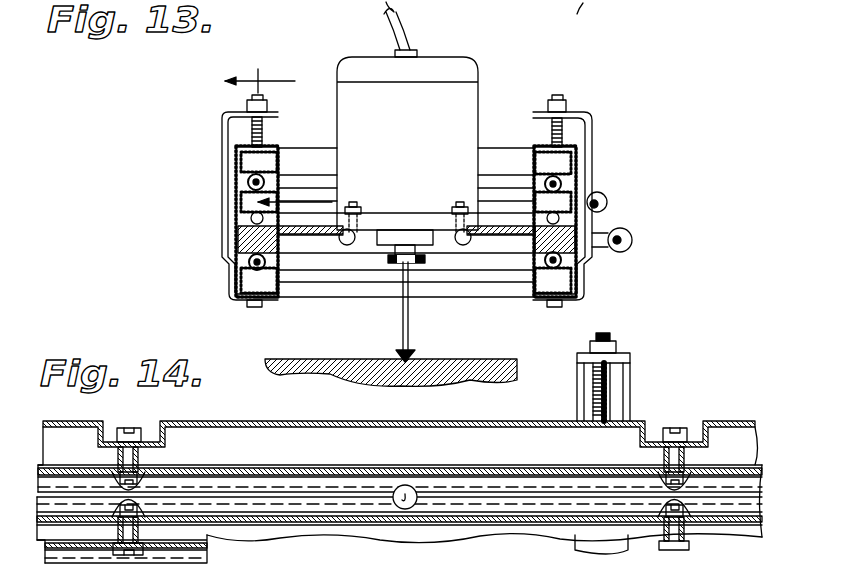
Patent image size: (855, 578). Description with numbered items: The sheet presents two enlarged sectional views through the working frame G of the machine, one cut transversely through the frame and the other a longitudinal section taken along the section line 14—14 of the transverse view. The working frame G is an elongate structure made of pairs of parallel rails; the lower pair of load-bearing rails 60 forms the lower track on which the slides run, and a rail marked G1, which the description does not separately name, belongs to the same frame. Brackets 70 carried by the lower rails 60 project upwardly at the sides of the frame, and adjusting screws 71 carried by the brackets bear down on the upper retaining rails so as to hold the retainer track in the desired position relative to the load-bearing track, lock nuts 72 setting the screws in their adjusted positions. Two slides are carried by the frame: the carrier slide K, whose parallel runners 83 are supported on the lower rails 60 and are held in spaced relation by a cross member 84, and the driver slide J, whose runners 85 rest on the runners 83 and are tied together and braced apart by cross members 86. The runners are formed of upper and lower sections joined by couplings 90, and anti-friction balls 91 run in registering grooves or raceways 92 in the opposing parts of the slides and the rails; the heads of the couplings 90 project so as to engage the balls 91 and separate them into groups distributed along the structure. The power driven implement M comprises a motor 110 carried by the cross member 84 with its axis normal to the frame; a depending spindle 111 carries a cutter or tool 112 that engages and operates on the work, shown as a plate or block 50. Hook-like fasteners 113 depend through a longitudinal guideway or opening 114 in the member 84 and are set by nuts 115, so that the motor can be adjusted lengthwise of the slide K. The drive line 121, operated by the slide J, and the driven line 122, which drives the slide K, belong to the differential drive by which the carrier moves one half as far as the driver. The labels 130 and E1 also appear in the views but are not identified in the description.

In FIG. 13, the sheet 130 is at (593, 12).
In FIG. 13, the motor 110 is at (407, 116).
In FIG. 13, the power driven implement M is at (473, 70).
In FIG. 13, the section line 14— 14 is at (278, 138).
In FIG. 13, the adjusting screws 71 is at (266, 130).
In FIG. 14, the adjusting screws 71 is at (612, 396).
In FIG. 13, the lock nuts 72 is at (570, 107).
In FIG. 14, the lock nuts 72 is at (618, 345).
In FIG. 13, the brackets 70 is at (592, 149).
In FIG. 14, the brackets 70 is at (632, 373).
In FIG. 13, the driver slide J is at (316, 182).
In FIG. 13, the rail G1 is at (522, 142).
In FIG. 14, the rail G1 is at (748, 422).
In FIG. 13, the working frame G is at (574, 298).
In FIG. 14, the working frame G is at (292, 418).
In FIG. 13, the cross members 86 is at (494, 186).
In FIG. 13, the grooves or raceways 92 is at (562, 182).
In FIG. 14, the grooves or raceways 92 is at (523, 516).
In FIG. 13, the anti-friction balls 91 is at (560, 216).
In FIG. 14, the anti-friction balls 91 is at (415, 490).
In FIG. 13, the nuts 115 is at (462, 200).
In FIG. 13, the hook-like fasteners 113 is at (340, 233).
In FIG. 13, the longitudinal guideway 114 is at (352, 228).
In FIG. 13, the runners 85 is at (238, 182).
In FIG. 13, the runners 83 is at (238, 246).
In FIG. 13, the cross member 84 is at (524, 228).
In FIG. 13, the drive line 121 is at (608, 202).
In FIG. 13, the driven line 122 is at (633, 240).
In FIG. 13, the carrier slide K is at (306, 252).
In FIG. 13, the lower load-bearing rails 60 is at (278, 297).
In FIG. 13, the spindle 111 is at (410, 323).
In FIG. 13, the cutter or tool 112 is at (398, 357).
In FIG. 13, the plate or block 50 is at (304, 359).
In FIG. 13, the engraved surface E1 is at (496, 360).
In FIG. 14, the couplings 90 is at (150, 454).